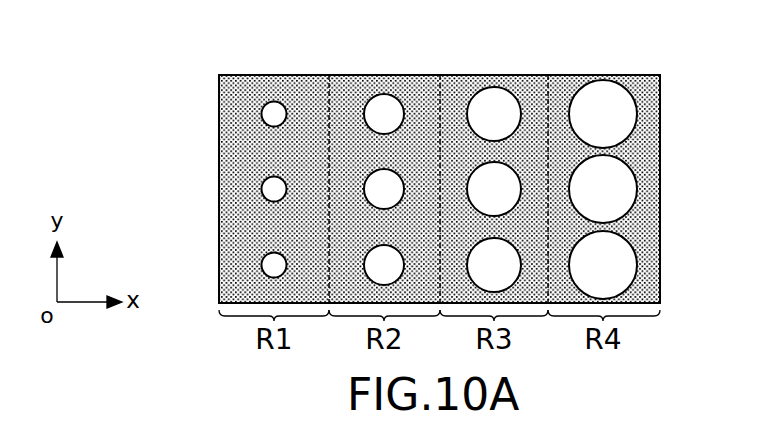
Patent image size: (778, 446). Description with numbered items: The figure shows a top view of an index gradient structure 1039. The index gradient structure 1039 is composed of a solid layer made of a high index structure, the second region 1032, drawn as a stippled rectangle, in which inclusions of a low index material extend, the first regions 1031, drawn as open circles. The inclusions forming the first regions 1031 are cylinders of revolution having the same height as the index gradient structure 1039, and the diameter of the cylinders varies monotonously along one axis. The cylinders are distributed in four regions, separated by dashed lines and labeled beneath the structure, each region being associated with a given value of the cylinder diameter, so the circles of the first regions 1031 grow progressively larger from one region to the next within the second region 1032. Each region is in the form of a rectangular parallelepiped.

The first regions 1031 is at (383, 100).
The second region 1032 is at (286, 82).
The index gradient structure 1039 is at (361, 153).